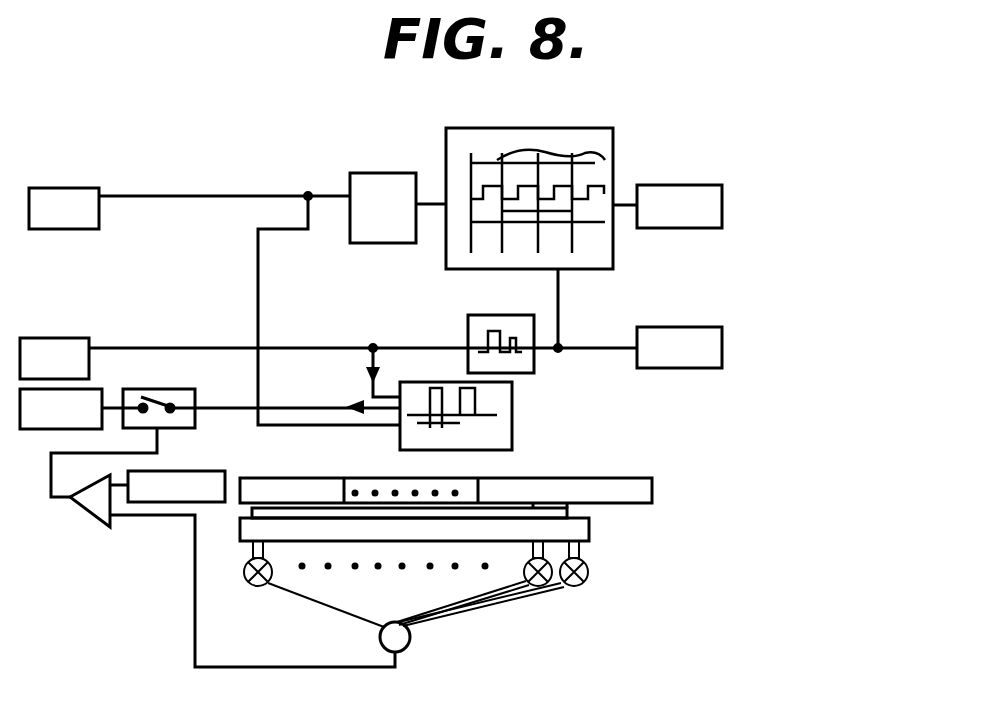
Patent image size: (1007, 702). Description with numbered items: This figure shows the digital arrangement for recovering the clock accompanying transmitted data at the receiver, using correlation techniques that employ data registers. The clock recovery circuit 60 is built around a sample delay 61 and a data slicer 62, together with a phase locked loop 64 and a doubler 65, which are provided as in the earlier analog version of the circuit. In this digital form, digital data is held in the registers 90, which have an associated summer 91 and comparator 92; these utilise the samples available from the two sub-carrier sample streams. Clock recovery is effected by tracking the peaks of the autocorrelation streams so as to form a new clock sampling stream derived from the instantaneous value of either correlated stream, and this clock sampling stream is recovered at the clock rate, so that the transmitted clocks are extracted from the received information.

The clock recovery circuit 60 is at (788, 297).
The sample delay 61 is at (378, 188).
The data slicer 62 is at (607, 149).
The phase locked loop 64 is at (500, 428).
The doubler 65 is at (518, 358).
The registers 90 is at (578, 528).
The summer 91 is at (405, 640).
The comparator 92 is at (97, 498).